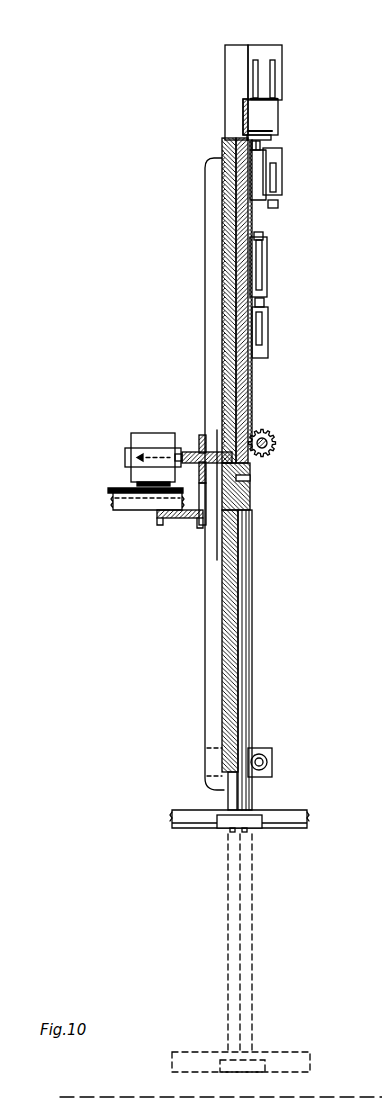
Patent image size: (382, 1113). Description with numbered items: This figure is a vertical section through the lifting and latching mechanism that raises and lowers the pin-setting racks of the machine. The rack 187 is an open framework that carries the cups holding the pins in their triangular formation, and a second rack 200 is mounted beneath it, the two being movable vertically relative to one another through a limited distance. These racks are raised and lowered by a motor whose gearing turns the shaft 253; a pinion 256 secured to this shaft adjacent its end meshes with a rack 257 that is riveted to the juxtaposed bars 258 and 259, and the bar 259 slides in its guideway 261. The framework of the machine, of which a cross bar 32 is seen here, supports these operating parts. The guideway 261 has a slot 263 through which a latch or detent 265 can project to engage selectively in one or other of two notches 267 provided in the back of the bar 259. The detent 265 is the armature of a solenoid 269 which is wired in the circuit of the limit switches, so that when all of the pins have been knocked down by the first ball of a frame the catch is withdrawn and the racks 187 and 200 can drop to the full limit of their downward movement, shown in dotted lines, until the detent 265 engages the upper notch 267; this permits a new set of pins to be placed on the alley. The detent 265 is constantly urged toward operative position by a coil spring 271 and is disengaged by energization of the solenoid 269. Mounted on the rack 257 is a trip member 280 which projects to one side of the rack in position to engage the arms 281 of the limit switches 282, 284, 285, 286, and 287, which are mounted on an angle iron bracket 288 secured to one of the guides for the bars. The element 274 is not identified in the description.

The angle iron bracket 288 is at (233, 95).
The shaft 253 is at (265, 449).
The rack 257 is at (250, 392).
The pinion 256 is at (271, 430).
The limit switch 282 is at (274, 58).
The arms of the limit switches 281 is at (275, 70).
The trip member 280 is at (273, 114).
The limit switch 284 is at (255, 193).
The limit switch 285 is at (281, 156).
The limit switch 286 is at (264, 285).
The limit switch 287 is at (264, 347).
The guideway 261 is at (205, 320).
The notch 267 is at (222, 230).
The slot 263 is at (229, 454).
The coil spring 271 is at (198, 483).
The solenoid 269 is at (145, 438).
The latch or detent 265 is at (185, 453).
The support 274 is at (137, 502).
The cross bar 32 is at (160, 514).
The bar 258 is at (250, 702).
The bar 259 is at (225, 702).
The rack 187 is at (285, 812).
The second rack 200 is at (283, 829).